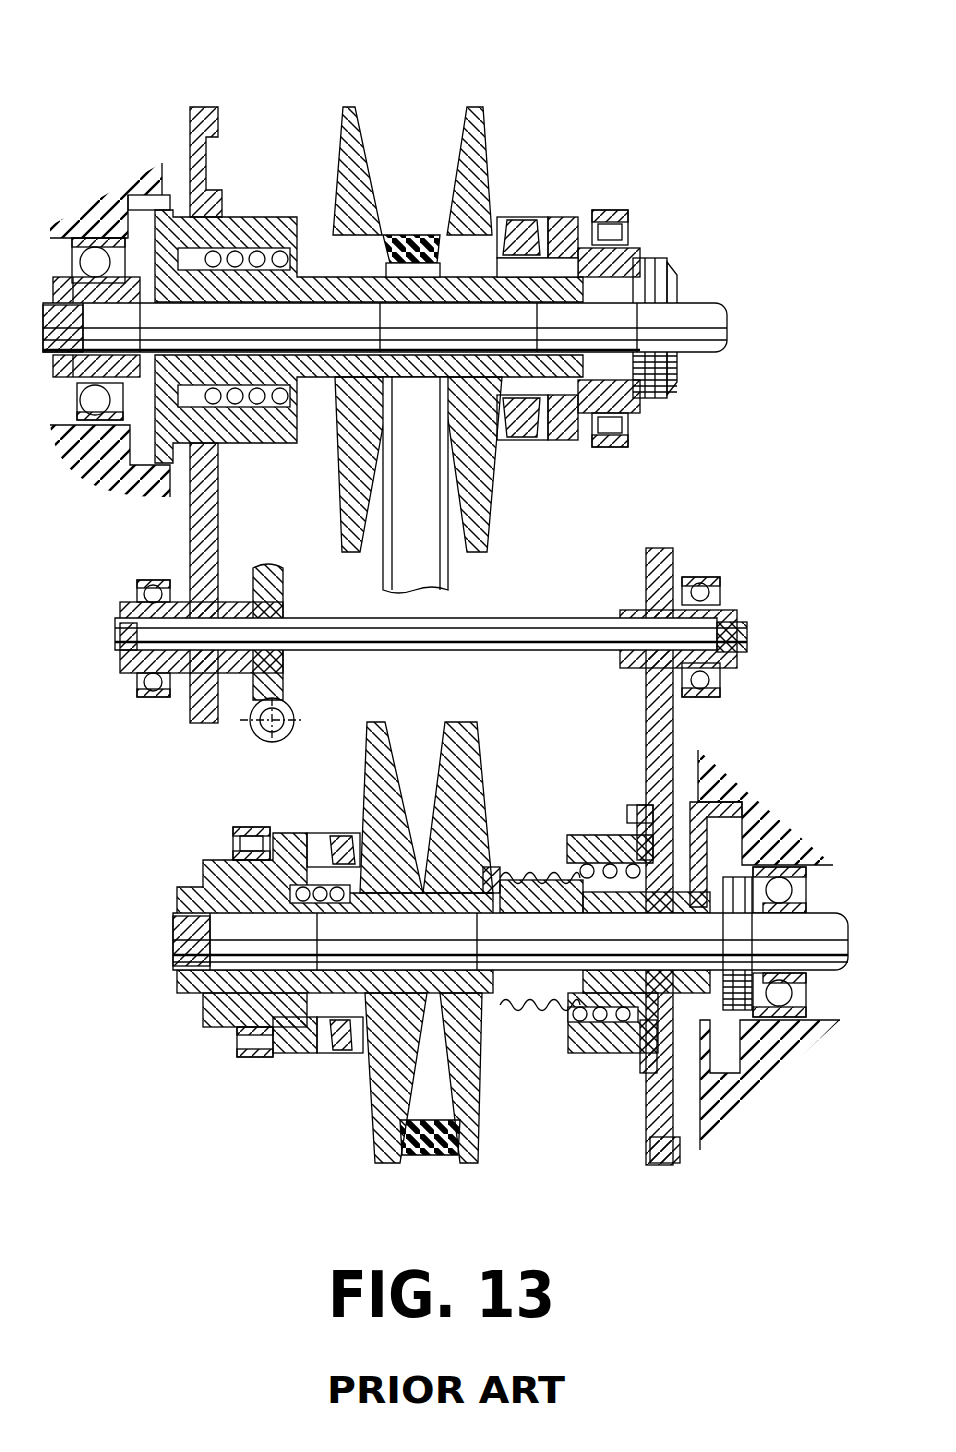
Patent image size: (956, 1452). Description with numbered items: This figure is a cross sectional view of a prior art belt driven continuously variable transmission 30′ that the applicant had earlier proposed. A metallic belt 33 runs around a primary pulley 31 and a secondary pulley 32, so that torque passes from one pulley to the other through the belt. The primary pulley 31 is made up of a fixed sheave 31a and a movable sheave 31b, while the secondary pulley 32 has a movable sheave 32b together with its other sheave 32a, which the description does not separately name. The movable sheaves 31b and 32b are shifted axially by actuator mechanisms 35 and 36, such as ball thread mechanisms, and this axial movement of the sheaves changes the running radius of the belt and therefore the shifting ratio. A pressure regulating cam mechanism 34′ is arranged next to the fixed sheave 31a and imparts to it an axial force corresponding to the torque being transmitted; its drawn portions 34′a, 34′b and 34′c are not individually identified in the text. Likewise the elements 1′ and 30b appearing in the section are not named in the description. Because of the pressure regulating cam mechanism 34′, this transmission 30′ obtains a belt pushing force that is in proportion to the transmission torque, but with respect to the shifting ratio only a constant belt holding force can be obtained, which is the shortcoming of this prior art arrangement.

The belt driven continuously variable transmission 30′ is at (161, 14).
The primary pulley 31 is at (305, 141).
The fixed sheave 31a is at (497, 118).
The movable sheave 31b is at (329, 138).
The actuator mechanism 35 is at (256, 208).
The pressure regulating cam mechanism 34′ is at (542, 208).
The bearing inner ring 34′a is at (566, 213).
The bearing roller 34′b is at (521, 216).
The bearing lower roller 34′c is at (509, 450).
The bearing 1′ is at (615, 228).
The shaft end support 30b is at (632, 398).
The secondary pulley 32 is at (489, 771).
The movable sheave of output pulley 32a is at (363, 1123).
The movable sheave 32b is at (480, 1123).
The metallic belt 33 is at (434, 1150).
The actuator mechanism 36 is at (568, 827).